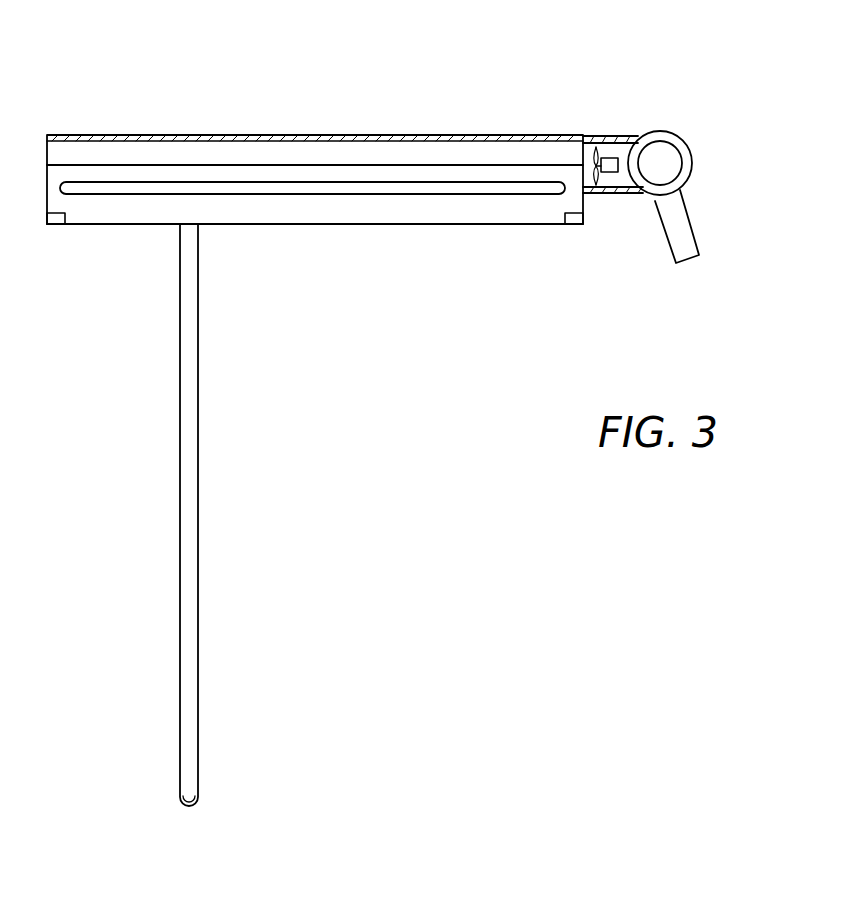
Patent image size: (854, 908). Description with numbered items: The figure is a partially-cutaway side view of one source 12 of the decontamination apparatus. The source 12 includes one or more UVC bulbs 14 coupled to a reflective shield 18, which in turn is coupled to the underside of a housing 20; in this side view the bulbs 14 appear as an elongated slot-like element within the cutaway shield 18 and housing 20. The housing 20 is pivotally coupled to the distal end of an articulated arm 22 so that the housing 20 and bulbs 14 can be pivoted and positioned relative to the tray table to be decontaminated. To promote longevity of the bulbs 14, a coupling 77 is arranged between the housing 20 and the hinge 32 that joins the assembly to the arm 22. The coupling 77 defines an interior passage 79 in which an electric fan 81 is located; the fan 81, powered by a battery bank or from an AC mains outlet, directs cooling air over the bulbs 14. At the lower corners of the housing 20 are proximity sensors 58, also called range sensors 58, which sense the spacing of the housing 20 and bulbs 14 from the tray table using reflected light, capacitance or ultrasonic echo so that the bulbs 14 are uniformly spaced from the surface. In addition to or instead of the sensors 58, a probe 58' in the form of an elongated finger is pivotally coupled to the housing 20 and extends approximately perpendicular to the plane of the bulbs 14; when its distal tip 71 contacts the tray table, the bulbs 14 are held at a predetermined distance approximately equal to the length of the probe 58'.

The source 12 is at (383, 100).
The UVC bulbs 14 is at (247, 196).
The reflective shield 18 is at (145, 212).
The housing 20 is at (218, 139).
The articulated arm 22 is at (677, 222).
The hinge 32 is at (676, 133).
The proximity sensors 58 is at (317, 254).
The probe 58' is at (221, 515).
The distal tip 71 is at (188, 806).
The coupling 77 is at (588, 130).
The interior passage 79 is at (617, 144).
The electric fan 81 is at (611, 172).